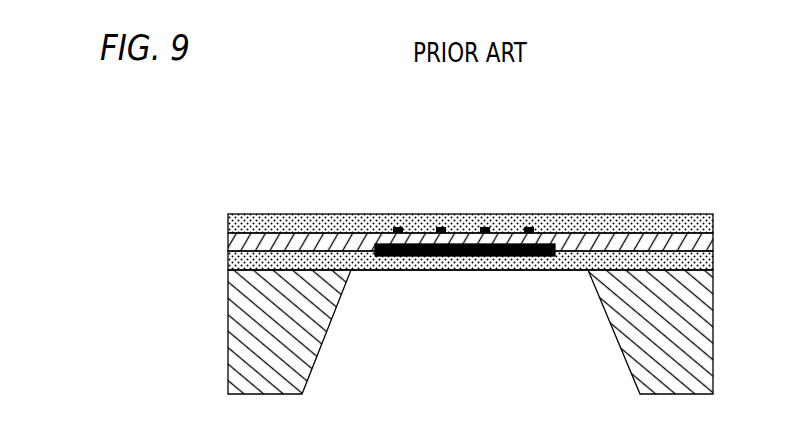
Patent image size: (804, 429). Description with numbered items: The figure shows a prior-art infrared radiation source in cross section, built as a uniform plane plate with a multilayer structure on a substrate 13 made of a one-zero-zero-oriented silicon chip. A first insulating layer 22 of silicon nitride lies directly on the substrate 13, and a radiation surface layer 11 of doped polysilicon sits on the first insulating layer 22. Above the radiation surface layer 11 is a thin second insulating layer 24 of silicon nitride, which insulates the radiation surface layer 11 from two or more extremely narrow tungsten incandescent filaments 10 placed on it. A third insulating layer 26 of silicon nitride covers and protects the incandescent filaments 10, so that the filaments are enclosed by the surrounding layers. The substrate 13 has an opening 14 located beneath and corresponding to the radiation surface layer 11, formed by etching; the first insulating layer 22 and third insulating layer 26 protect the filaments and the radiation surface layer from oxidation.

The incandescent filaments 10 is at (528, 227).
The radiation surface layer 11 is at (468, 254).
The substrate 13 is at (228, 358).
The opening 14 is at (523, 307).
The first insulating layer 22 is at (232, 261).
The second insulating layer 24 is at (232, 242).
The third insulating layer 26 is at (232, 218).